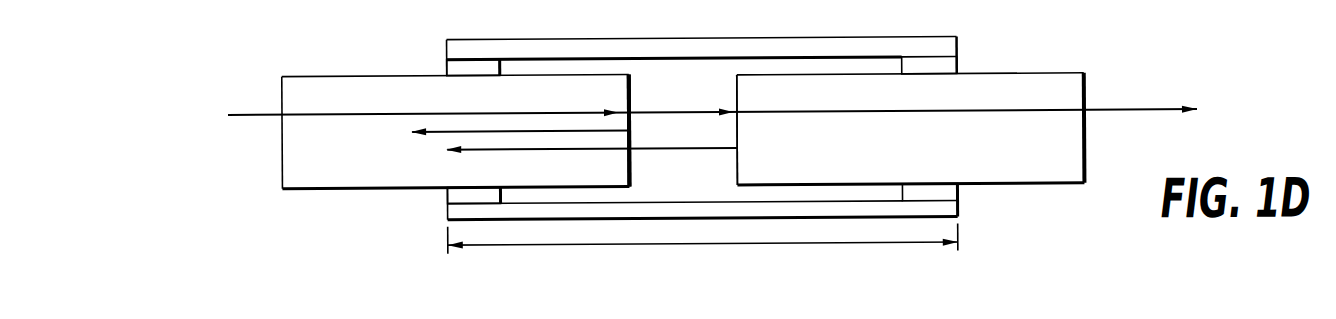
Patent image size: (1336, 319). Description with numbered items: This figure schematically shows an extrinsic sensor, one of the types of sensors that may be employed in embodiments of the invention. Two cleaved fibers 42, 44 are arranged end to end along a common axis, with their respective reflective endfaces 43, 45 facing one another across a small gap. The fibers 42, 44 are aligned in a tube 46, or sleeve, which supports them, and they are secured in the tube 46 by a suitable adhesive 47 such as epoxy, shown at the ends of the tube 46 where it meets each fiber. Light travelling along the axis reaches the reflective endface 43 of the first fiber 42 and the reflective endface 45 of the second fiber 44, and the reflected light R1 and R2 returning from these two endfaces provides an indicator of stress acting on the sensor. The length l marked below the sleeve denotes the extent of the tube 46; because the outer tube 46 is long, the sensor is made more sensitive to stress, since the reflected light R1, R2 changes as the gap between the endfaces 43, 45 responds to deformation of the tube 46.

The cleaved fiber 42 is at (321, 80).
The cleaved fiber 44 is at (1053, 81).
The tube 46 is at (686, 17).
The adhesive 47 is at (447, 72).
The reflective endface 43 is at (634, 98).
The reflective endface 45 is at (737, 169).
The reflected light R1 is at (445, 136).
The reflected light R2 is at (526, 152).
The gap length l is at (703, 253).